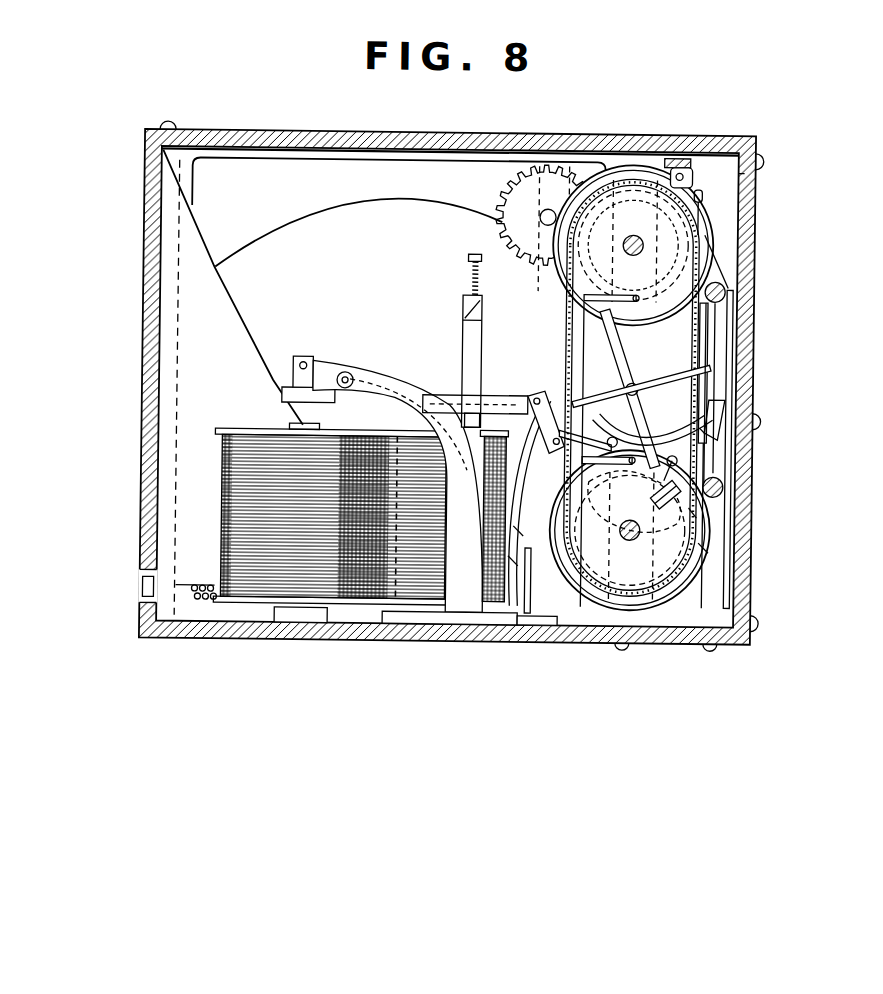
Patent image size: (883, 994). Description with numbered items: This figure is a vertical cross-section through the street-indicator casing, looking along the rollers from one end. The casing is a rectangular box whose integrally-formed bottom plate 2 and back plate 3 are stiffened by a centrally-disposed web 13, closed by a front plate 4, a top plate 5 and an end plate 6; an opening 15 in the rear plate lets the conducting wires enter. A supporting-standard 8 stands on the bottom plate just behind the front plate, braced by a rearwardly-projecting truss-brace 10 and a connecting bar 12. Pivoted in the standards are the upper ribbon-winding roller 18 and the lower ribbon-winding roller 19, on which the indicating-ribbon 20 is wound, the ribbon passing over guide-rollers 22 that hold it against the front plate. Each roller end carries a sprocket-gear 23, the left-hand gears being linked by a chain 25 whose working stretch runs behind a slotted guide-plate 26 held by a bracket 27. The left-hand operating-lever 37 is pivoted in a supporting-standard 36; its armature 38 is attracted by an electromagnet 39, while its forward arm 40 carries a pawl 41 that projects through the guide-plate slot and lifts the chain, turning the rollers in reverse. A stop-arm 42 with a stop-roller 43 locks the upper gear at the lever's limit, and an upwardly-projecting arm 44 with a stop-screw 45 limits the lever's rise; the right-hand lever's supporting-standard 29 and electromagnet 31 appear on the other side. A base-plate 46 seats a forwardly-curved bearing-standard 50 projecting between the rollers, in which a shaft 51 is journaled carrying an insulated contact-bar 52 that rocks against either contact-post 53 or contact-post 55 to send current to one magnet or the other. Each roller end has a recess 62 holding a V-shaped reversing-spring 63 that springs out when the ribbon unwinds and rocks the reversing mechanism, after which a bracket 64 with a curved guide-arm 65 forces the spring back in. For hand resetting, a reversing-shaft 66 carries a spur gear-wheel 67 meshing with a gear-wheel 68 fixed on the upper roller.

The bottom plate 2 is at (360, 634).
The back plate 3 is at (148, 355).
The front plate 4 is at (746, 352).
The top plate 5 is at (472, 133).
The end plate 6 is at (399, 207).
The right supporting-standard 8 is at (718, 575).
The truss-brace 10 is at (358, 227).
The connecting bar 12 is at (684, 149).
The web 13 is at (238, 325).
The opening 15 is at (148, 580).
The upper ribbon-winding roller 18 is at (675, 245).
The lower ribbon-winding roller 19 is at (708, 545).
The indicating-ribbon 20 is at (718, 395).
The guide-roller 22 is at (724, 290).
The sprocket-gear 23 is at (585, 272).
The chain 25 is at (718, 420).
The guide-plate 26 is at (593, 330).
The bracket 27 is at (606, 298).
The supporting-standard 29 is at (528, 590).
The electromagnet 31 is at (433, 392).
The supporting-standard 36 is at (520, 530).
The left-hand operating-lever 37 is at (490, 400).
The armature 38 is at (282, 395).
The electromagnet 39 is at (232, 500).
The downwardly-projecting arm 40 is at (512, 440).
The pawl 41 is at (555, 410).
The stop-arm 42 is at (590, 400).
The stop-roller 43 is at (645, 462).
The upwardly-projecting arm 44 is at (468, 344).
The stop-screw 45 is at (468, 267).
The base-plate 46 is at (540, 628).
The bearing-standard 50 is at (510, 490).
The shaft 51 is at (657, 385).
The contact-bar 52 is at (680, 385).
The contact-post 53 is at (500, 478).
The contact-post 55 is at (515, 560).
The recess 62 is at (700, 520).
The reversing-spring 63 is at (684, 484).
The bracket 64 is at (612, 345).
The guide-arm 65 is at (700, 320).
The reversing-shaft 66 is at (538, 220).
The spur gear-wheel 67 is at (520, 203).
The gear-wheel 68 is at (745, 183).